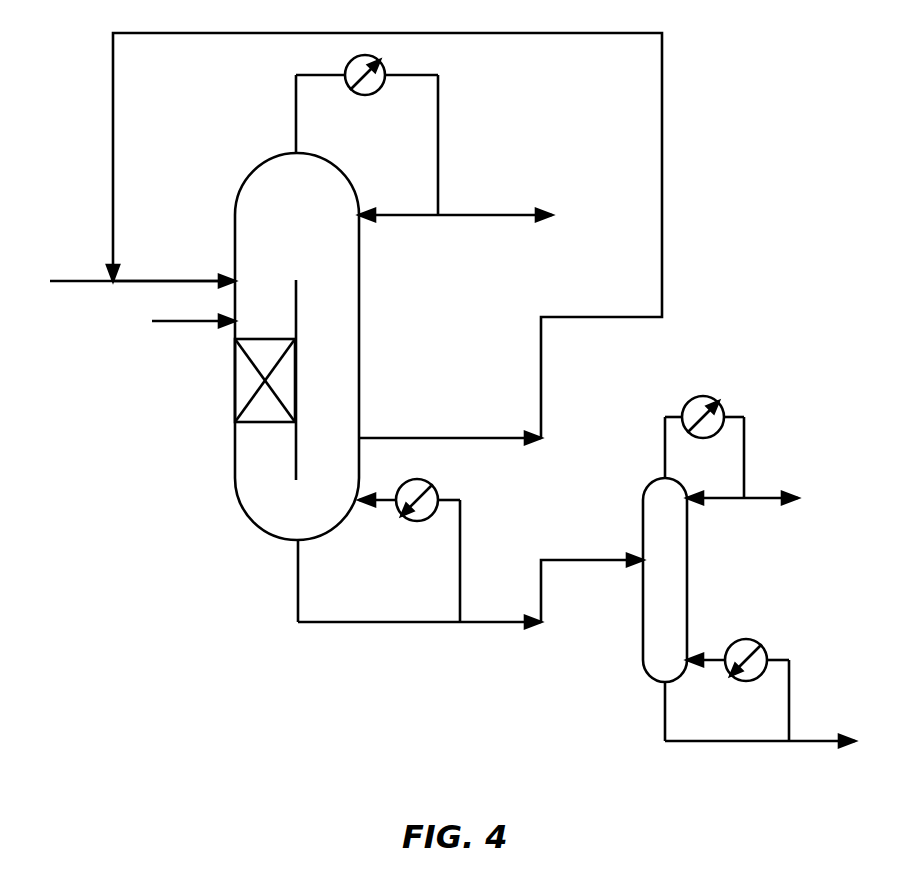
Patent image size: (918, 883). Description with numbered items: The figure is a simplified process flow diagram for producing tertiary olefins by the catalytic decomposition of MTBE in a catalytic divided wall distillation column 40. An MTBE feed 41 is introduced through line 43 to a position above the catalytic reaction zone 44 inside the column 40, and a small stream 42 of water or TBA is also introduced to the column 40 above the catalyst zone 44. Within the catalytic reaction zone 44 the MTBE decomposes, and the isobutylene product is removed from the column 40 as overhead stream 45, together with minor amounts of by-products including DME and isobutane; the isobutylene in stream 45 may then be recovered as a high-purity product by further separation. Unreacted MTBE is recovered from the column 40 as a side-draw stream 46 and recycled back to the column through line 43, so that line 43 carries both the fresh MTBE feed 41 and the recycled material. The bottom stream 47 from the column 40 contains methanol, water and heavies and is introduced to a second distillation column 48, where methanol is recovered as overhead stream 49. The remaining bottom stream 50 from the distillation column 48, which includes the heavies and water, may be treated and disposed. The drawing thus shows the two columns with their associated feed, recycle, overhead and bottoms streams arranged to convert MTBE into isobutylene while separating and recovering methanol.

The catalytic divided wall distillation column 40 is at (258, 167).
The MTBE feed 41 is at (80, 281).
The small stream of water or TBA 42 is at (188, 321).
The line 43 is at (195, 281).
The catalytic reaction zone 44 is at (243, 385).
The overhead stream 45 is at (473, 215).
The side-draw stream 46 is at (113, 135).
The bottom stream 47 is at (542, 587).
The distillation column 48 is at (642, 520).
The overhead stream 49 is at (758, 500).
The bottom stream 50 is at (813, 741).